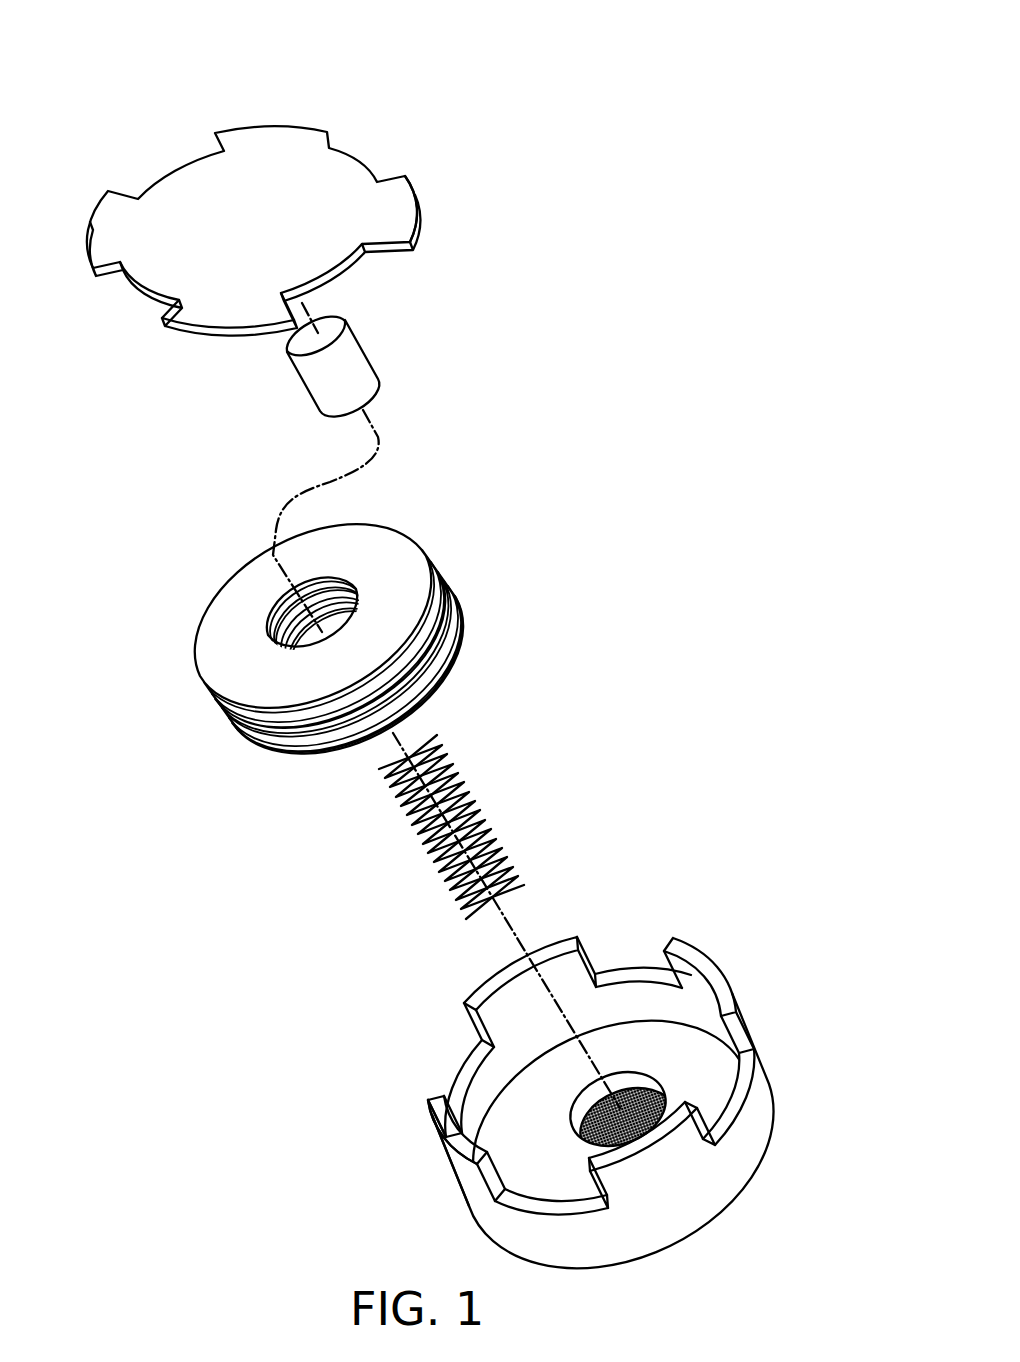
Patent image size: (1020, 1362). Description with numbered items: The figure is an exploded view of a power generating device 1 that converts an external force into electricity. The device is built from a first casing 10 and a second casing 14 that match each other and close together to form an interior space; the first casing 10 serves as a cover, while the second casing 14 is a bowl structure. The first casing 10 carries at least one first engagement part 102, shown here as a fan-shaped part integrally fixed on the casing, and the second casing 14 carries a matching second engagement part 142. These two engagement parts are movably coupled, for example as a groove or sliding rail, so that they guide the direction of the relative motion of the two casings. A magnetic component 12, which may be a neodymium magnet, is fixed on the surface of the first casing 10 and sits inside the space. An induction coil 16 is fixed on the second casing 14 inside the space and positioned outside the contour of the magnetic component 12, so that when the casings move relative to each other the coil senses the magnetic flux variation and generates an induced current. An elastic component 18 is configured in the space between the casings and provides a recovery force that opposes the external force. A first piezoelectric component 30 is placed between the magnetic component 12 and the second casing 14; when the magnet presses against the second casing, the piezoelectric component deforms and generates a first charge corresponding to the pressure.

The power generating device 1 is at (249, 77).
The first casing 10 is at (203, 150).
The first engagement part 102 is at (417, 233).
The magnetic component 12 is at (363, 353).
The induction coil 16 is at (447, 578).
The elastic component 18 is at (488, 838).
The second casing 14 is at (773, 1058).
The second engagement part 142 is at (467, 1065).
The first piezoelectric component 30 is at (645, 1106).